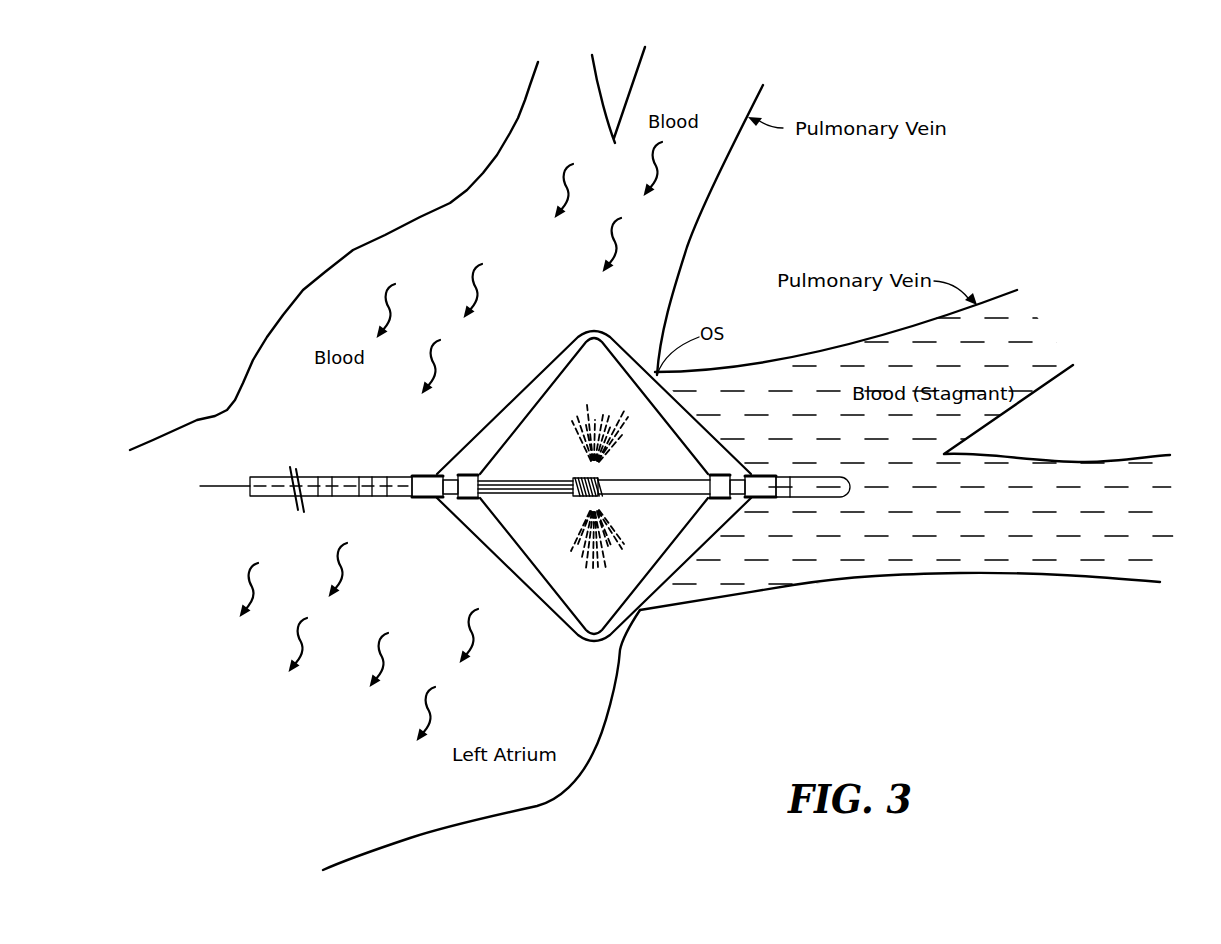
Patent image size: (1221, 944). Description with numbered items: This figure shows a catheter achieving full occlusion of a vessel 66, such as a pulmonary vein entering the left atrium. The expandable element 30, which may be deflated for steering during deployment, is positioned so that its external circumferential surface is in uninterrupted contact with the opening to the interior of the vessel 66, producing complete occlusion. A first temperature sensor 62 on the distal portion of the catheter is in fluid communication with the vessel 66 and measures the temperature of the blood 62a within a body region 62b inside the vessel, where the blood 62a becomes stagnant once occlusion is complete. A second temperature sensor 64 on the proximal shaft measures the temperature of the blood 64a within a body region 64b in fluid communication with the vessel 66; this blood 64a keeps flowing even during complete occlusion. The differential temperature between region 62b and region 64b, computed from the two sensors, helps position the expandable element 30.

The expandable element 30 is at (485, 549).
The first temperature sensor 62 is at (786, 498).
The blood 62a is at (924, 451).
The body region 62b is at (710, 475).
The second temperature sensor 64 is at (398, 479).
The blood 64a is at (518, 268).
The body region 64b is at (359, 569).
The vessel 66 is at (781, 362).